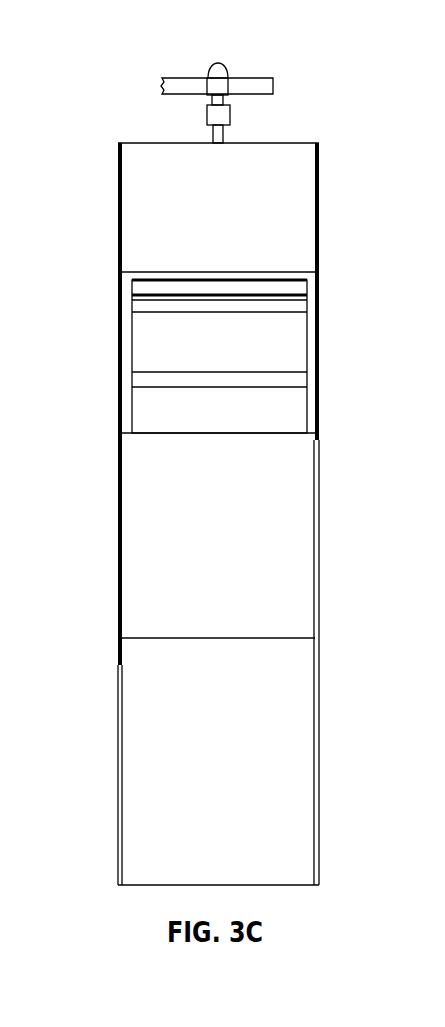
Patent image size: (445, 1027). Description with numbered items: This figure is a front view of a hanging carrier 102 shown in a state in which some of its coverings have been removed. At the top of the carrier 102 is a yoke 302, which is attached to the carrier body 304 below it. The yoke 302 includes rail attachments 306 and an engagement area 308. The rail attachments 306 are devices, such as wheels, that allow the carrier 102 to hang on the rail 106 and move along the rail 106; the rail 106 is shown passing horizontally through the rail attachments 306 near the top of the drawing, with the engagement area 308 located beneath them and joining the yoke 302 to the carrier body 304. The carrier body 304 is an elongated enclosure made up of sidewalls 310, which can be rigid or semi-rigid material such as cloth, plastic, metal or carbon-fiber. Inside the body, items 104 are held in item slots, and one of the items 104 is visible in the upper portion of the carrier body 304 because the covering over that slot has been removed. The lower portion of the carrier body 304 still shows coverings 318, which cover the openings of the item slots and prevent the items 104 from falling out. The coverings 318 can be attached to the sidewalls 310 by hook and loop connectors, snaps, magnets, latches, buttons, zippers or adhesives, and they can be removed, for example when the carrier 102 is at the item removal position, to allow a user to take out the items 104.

The carrier 102 is at (126, 78).
The yoke 302 is at (166, 113).
The carrier body 304 is at (336, 242).
The rail attachments 306 is at (230, 68).
The rail 106 is at (265, 85).
The engagement area 308 is at (232, 115).
The items 104 is at (278, 341).
The sidewalls 310 is at (318, 427).
The coverings 318 is at (295, 545).